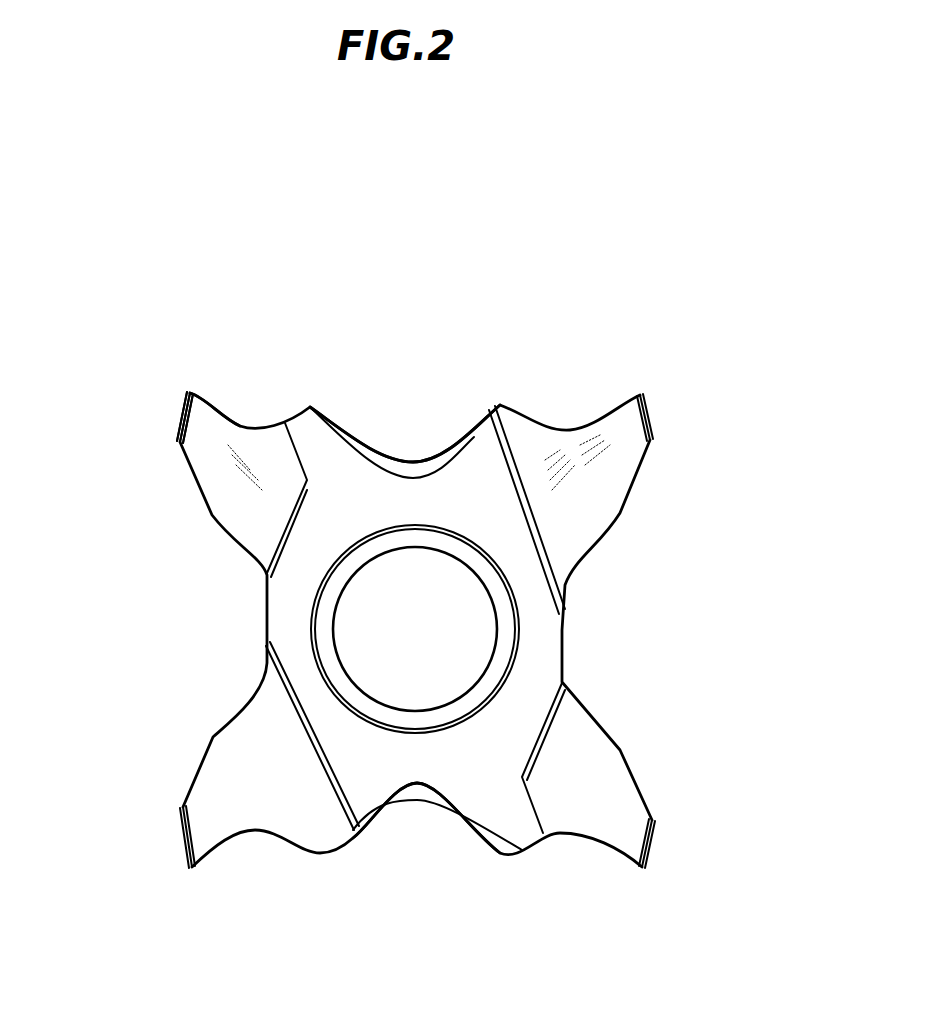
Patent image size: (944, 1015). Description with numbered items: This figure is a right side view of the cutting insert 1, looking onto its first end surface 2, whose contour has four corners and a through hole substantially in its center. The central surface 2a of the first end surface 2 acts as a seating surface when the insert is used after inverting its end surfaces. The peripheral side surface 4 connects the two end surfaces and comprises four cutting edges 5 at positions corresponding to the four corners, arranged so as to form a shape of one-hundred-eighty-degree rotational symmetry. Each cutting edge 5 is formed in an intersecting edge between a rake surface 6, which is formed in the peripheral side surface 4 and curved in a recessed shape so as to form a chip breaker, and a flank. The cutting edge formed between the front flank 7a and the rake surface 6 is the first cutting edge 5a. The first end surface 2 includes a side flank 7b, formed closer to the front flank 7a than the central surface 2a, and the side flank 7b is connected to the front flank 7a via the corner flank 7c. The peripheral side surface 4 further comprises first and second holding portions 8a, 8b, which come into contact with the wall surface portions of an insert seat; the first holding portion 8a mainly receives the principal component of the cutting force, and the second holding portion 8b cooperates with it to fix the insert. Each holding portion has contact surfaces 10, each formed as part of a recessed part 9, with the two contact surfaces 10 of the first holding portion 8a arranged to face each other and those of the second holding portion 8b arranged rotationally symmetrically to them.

The cutting insert 1 is at (690, 437).
The first end surface 2 is at (507, 543).
The central surface 2a is at (520, 573).
The peripheral side surface 4 is at (490, 405).
The cutting edge 5 is at (192, 390).
The first cutting edge 5a is at (187, 385).
The rake surface 6 is at (200, 400).
The front flank 7a is at (183, 410).
The side flank 7b is at (213, 442).
The corner flank 7c is at (180, 418).
The first holding portion 8a is at (450, 813).
The second holding portion 8b is at (457, 447).
The recessed part 9 is at (425, 457).
The contact surface 10 is at (478, 432).